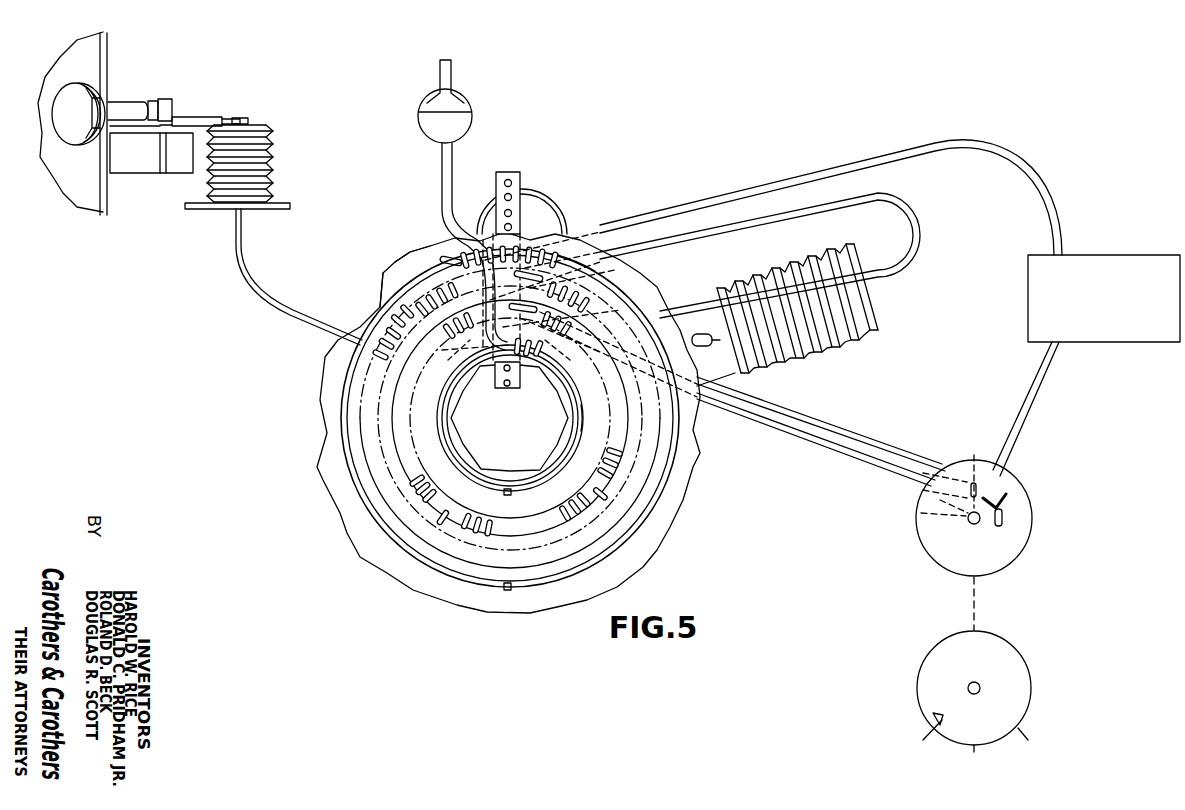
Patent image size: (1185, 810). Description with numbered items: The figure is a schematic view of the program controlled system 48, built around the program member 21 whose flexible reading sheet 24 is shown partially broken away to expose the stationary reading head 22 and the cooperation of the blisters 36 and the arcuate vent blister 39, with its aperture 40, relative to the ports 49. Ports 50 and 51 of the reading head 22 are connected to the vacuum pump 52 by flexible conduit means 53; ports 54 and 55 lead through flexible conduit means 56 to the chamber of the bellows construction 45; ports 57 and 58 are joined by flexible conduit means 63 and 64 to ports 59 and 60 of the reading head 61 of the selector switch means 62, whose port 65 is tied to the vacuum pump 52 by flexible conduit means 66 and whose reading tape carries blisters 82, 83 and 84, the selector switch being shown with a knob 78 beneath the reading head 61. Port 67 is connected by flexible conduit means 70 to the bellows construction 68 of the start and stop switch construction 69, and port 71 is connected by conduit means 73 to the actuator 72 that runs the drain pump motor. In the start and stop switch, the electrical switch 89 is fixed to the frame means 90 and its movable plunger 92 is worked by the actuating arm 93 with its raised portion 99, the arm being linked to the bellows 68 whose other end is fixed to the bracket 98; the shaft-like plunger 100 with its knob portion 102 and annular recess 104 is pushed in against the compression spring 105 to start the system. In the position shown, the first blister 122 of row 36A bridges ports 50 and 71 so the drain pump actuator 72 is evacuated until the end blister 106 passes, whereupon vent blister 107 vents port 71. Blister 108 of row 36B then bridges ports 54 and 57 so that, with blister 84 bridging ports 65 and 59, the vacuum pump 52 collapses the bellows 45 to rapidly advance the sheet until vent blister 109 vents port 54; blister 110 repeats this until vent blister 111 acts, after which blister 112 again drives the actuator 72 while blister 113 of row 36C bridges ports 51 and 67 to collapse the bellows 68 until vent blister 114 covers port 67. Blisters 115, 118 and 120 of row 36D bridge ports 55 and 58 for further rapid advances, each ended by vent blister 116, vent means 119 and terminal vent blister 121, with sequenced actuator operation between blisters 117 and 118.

The program member 21 is at (343, 514).
The reading head 22 is at (522, 186).
The reading sheet 24 is at (690, 490).
The blisters 36 is at (378, 351).
The first row of blisters 36A is at (565, 236).
The row of blisters 36B is at (430, 298).
The row of blisters 36C is at (581, 424).
The row of blisters 36D is at (416, 452).
The arcuate vent blister 39 is at (440, 578).
The aperture 40 is at (507, 591).
The bellows construction 45 is at (834, 342).
The program controlled system 48 is at (618, 82).
The ports 49 is at (503, 181).
The port 50 is at (520, 237).
The port 51 is at (512, 346).
The vacuum pump 52 is at (1108, 256).
The flexible conduit means 53 is at (854, 160).
The port 54 is at (478, 259).
The port 55 is at (512, 320).
The flexible conduit means 56 is at (762, 228).
The port 57 is at (465, 289).
The port 58 is at (540, 350).
The port 59 is at (970, 452).
The port 60 is at (920, 513).
The reading head 61 is at (1030, 540).
The selector switch means 62 is at (1035, 492).
The flexible conduit means 63 is at (856, 430).
The flexible conduit means 64 is at (856, 466).
The port 65 is at (966, 523).
The flexible conduit means 66 is at (1046, 392).
The port 67 is at (480, 380).
The bellows construction 68 is at (280, 167).
The start and stop switch construction 69 is at (212, 88).
The flexible conduit means 70 is at (238, 262).
The port 71 is at (577, 249).
The actuator 72 is at (432, 112).
The conduit means 73 is at (440, 188).
The control knob 78 is at (1015, 660).
The blister 82 is at (1003, 518).
The blister 83 is at (1000, 481).
The blister 84 is at (978, 464).
The electrical switch 89 is at (134, 167).
The frame means 90 is at (90, 200).
The movable plunger 92 is at (162, 130).
The actuating arm 93 is at (207, 116).
The bracket 98 is at (290, 209).
The raised portion 99 is at (168, 110).
The shaft-like plunger 100 is at (130, 103).
The knob portion 102 is at (75, 120).
The annular recess 104 is at (153, 100).
The compression spring 105 is at (101, 98).
The end blister 106 is at (478, 254).
The vent blister 107 is at (396, 265).
The blister 108 is at (470, 266).
The vent blister 109 is at (400, 312).
The blister 110 is at (420, 345).
The vent blister 111 is at (610, 272).
The blister 112 is at (600, 254).
The blister 113 is at (525, 385).
The vent blister 114 is at (440, 429).
The blister 115 is at (452, 328).
The vent blister 116 is at (443, 517).
The blister 117 is at (423, 496).
The blister 118 is at (468, 531).
The vent means 119 is at (600, 493).
The blister 120 is at (600, 463).
The terminal vent blister 121 is at (590, 300).
The first blister 122 is at (488, 248).